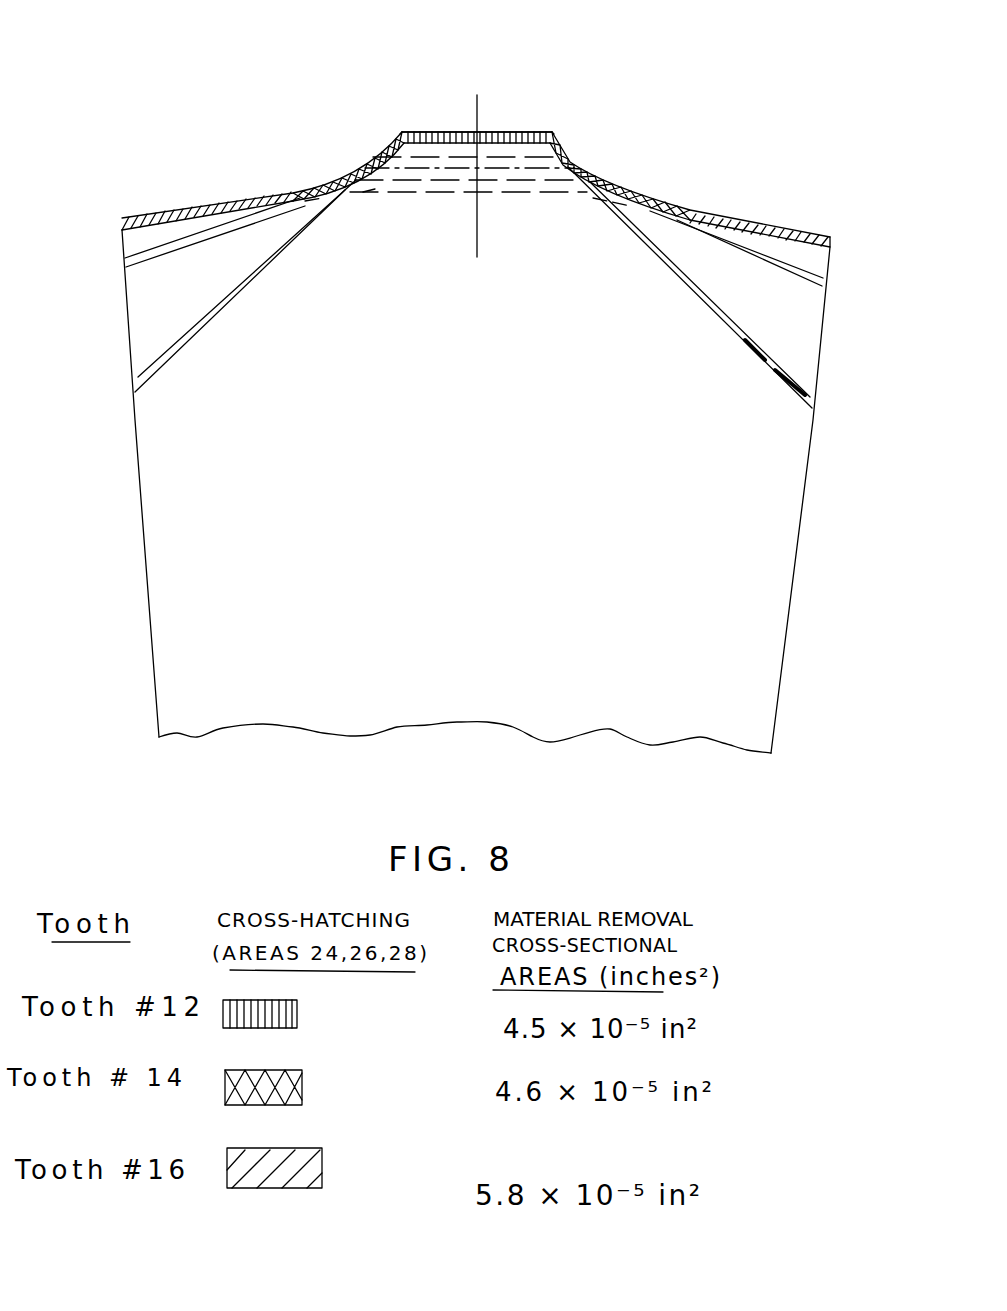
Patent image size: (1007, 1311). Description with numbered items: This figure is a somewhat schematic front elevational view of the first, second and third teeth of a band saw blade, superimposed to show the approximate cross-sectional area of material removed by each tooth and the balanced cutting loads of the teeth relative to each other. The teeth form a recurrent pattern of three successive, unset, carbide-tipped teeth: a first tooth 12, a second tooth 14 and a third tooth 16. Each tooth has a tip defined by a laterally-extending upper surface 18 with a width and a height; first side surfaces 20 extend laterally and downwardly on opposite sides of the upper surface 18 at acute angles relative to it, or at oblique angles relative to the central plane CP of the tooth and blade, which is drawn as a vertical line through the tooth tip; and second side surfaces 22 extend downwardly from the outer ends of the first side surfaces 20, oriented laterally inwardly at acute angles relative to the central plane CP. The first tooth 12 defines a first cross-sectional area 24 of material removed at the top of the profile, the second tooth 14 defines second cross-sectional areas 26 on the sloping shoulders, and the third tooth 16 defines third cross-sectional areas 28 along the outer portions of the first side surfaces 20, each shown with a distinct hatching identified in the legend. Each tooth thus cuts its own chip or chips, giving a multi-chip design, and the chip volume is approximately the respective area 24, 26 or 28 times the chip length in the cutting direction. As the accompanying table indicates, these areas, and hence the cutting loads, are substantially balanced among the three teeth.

The first tooth 12 is at (438, 128).
The second tooth 14 is at (288, 187).
The third tooth 16 is at (222, 190).
The upper surface 18 is at (525, 132).
The first side surfaces 20 is at (142, 217).
The second side surfaces 22 is at (126, 343).
The first cross-sectional area 24 is at (469, 140).
The second cross-sectional areas 26 is at (327, 177).
The third cross-sectional areas 28 is at (188, 212).
The central plane CP is at (480, 107).